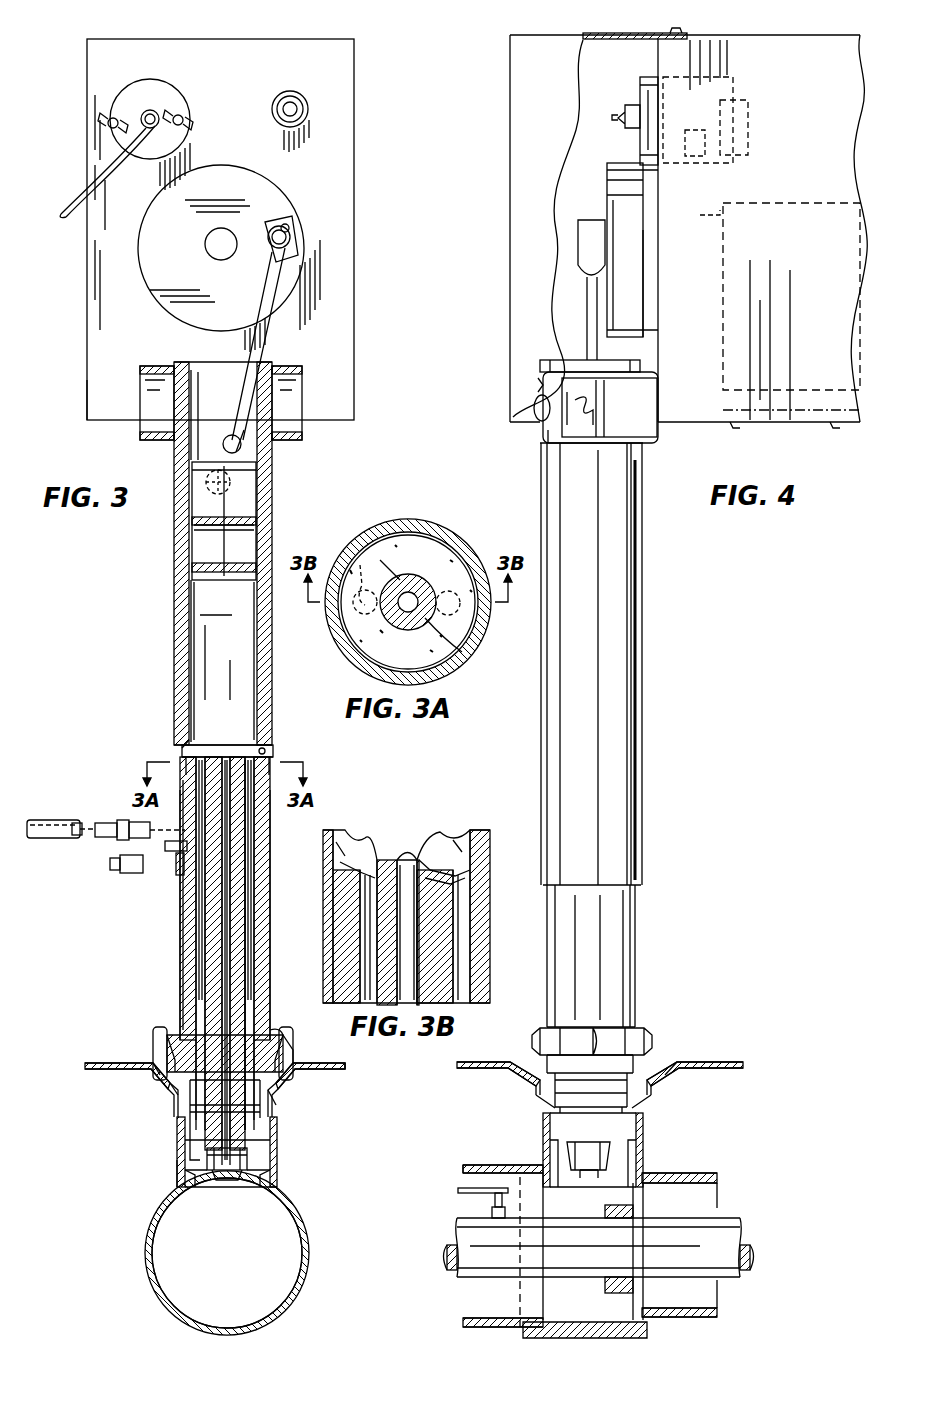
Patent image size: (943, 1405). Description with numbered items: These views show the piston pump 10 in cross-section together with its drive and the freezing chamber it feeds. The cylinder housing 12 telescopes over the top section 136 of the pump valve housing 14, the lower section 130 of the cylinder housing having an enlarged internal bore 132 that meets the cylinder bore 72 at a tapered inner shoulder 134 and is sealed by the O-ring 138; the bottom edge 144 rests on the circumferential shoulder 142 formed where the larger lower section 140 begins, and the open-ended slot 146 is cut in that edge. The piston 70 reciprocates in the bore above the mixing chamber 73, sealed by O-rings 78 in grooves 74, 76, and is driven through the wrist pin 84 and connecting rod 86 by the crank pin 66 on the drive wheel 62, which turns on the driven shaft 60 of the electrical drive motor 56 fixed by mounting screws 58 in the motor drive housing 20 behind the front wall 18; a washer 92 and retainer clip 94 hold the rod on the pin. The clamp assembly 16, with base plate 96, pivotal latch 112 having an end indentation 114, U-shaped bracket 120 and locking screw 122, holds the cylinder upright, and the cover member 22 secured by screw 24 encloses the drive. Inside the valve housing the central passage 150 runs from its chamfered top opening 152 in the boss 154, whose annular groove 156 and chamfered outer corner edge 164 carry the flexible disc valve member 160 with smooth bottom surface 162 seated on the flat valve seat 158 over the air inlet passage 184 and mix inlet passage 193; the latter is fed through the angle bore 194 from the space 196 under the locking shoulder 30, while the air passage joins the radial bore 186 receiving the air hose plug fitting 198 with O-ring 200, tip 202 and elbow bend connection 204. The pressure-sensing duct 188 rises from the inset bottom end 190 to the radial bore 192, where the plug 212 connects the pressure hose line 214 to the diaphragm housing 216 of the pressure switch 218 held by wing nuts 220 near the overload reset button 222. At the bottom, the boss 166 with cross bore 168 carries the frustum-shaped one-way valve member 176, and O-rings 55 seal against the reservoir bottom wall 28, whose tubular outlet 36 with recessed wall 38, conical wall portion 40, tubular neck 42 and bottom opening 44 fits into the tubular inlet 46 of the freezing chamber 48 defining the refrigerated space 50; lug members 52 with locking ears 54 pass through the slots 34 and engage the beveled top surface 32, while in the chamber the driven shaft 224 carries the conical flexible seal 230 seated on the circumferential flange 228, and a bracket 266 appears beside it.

In FIG. 3, the piston pump 10 is at (176, 685).
In FIG. 3, the cylinder housing 12 is at (273, 668).
In FIG. 3A, the cylinder housing 12 is at (418, 520).
In FIG. 4, the cylinder housing 12 is at (591, 664).
In FIG. 3, the pump valve housing 14 is at (272, 980).
In FIG. 4, the pump valve housing 14 is at (635, 953).
In FIG. 4, the clamp assembly 16 is at (648, 443).
In FIG. 3, the front wall 18 is at (241, 233).
In FIG. 4, the front wall 18 is at (662, 338).
In FIG. 3, the motor drive housing 20 is at (86, 403).
In FIG. 4, the motor drive housing 20 is at (781, 28).
In FIG. 4, the cover member 22 is at (625, 33).
In FIG. 4, the screw 24 is at (678, 28).
In FIG. 3, the bottom wall 28 is at (110, 1068).
In FIG. 4, the bottom wall 28 is at (727, 1062).
In FIG. 3, the locking shoulder 30 is at (175, 1045).
In FIG. 4, the locking shoulder 30 is at (652, 1042).
In FIG. 4, the beveled top surface 32 is at (645, 1038).
In FIG. 4, the slots 34 is at (634, 1025).
In FIG. 3, the tubular outlet 36 is at (276, 1092).
In FIG. 3, the recessed wall 38 is at (165, 1085).
In FIG. 4, the recessed wall 38 is at (668, 1068).
In FIG. 3, the conical wall portion 40 is at (178, 1095).
In FIG. 4, the conical wall portion 40 is at (545, 1100).
In FIG. 3, the tubular neck 42 is at (270, 1105).
In FIG. 4, the tubular neck 42 is at (630, 1118).
In FIG. 3, the bottom opening 44 is at (268, 1165).
In FIG. 4, the bottom opening 44 is at (545, 1150).
In FIG. 3, the tubular inlet 46 is at (279, 1140).
In FIG. 4, the tubular inlet 46 is at (645, 1143).
In FIG. 3, the freezing chamber 48 is at (305, 1222).
In FIG. 4, the freezing chamber 48 is at (692, 1168).
In FIG. 3, the refrigerated space 50 is at (160, 1236).
In FIG. 4, the refrigerated space 50 is at (490, 1293).
In FIG. 3, the lug members 52 is at (160, 1030).
In FIG. 3, the locking ears 54 is at (280, 1025).
In FIG. 3, the O-rings 55 is at (268, 1120).
In FIG. 4, the O-rings 55 is at (630, 1105).
In FIG. 4, the electrical drive motor 56 is at (833, 256).
In FIG. 4, the mounting screws 58 is at (840, 428).
In FIG. 3, the driven shaft 60 is at (232, 234).
In FIG. 4, the driven shaft 60 is at (668, 238).
In FIG. 3, the drive wheel 62 is at (296, 202).
In FIG. 4, the drive wheel 62 is at (607, 175).
In FIG. 3, the crank pin 66 is at (296, 249).
In FIG. 4, the crank pin 66 is at (578, 245).
In FIG. 3, the piston 70 is at (200, 546).
In FIG. 3, the cylinder bore 72 is at (191, 370).
In FIG. 3, the mixing chamber 73 is at (191, 615).
In FIG. 3, the groove 74 is at (252, 521).
In FIG. 3, the groove 76 is at (250, 568).
In FIG. 3, the O-rings 78 is at (256, 528).
In FIG. 3, the wrist pin 84 is at (258, 480).
In FIG. 3, the connecting rod 86 is at (261, 326).
In FIG. 4, the connecting rod 86 is at (587, 325).
In FIG. 3, the washer 92 is at (288, 231).
In FIG. 3, the retainer clip 94 is at (291, 235).
In FIG. 3, the base plate 96 is at (292, 392).
In FIG. 4, the pivotal latch 112 is at (540, 388).
In FIG. 4, the end indentation 114 is at (600, 408).
In FIG. 4, the U-shaped bracket 120 is at (550, 440).
In FIG. 4, the locking screw 122 is at (538, 412).
In FIG. 3, the lower section 130 is at (270, 850).
In FIG. 3, the internal bore 132 is at (268, 752).
In FIG. 3, the tapered inner shoulder 134 is at (190, 738).
In FIG. 3, the top section 136 is at (272, 830).
In FIG. 3, the O-ring 138 is at (272, 800).
In FIG. 3B, the O-ring 138 is at (480, 905).
In FIG. 3, the lower section 140 is at (262, 965).
In FIG. 3, the circumferential shoulder 142 is at (252, 920).
In FIG. 3, the bottom edge 144 is at (258, 895).
In FIG. 4, the bottom edge 144 is at (636, 890).
In FIG. 3, the open-ended slot 146 is at (178, 872).
In FIG. 3, the central passage 150 is at (258, 880).
In FIG. 3A, the central passage 150 is at (418, 594).
In FIG. 3B, the central passage 150 is at (405, 858).
In FIG. 3, the top opening 152 is at (262, 757).
In FIG. 3, the boss 154 is at (224, 770).
In FIG. 3A, the boss 154 is at (462, 652).
In FIG. 3B, the boss 154 is at (470, 865).
In FIG. 3B, the annular groove 156 is at (425, 855).
In FIG. 3B, the flat valve seat 158 is at (345, 845).
In FIG. 3, the disc valve member 160 is at (201, 757).
In FIG. 3A, the disc valve member 160 is at (390, 540).
In FIG. 3B, the disc valve member 160 is at (358, 850).
In FIG. 3B, the bottom surface 162 is at (470, 882).
In FIG. 3B, the outer corner edge 164 is at (465, 845).
In FIG. 3, the boss 166 is at (210, 1172).
In FIG. 4, the boss 166 is at (580, 1172).
In FIG. 3, the cross bore 168 is at (240, 1178).
In FIG. 3, the one-way valve member 176 is at (178, 1175).
In FIG. 4, the one-way valve member 176 is at (640, 1158).
In FIG. 3, the air inlet passage 184 is at (185, 765).
In FIG. 3A, the air inlet passage 184 is at (370, 540).
In FIG. 3B, the air inlet passage 184 is at (406, 925).
In FIG. 3, the radial bore 186 is at (185, 785).
In FIG. 3, the pressure-sensing duct 188 is at (200, 960).
In FIG. 3, the inset bottom end 190 is at (200, 1165).
In FIG. 3, the radial bore 192 is at (188, 846).
In FIG. 3, the mix inlet passage 193 is at (250, 925).
In FIG. 3A, the mix inlet passage 193 is at (486, 632).
In FIG. 3B, the mix inlet passage 193 is at (455, 950).
In FIG. 3, the angle bore 194 is at (296, 1045).
In FIG. 3, the space 196 is at (333, 1064).
In FIG. 3, the air hose plug fitting 198 is at (112, 820).
In FIG. 3, the O-ring 200 is at (140, 822).
In FIG. 3, the tip 202 is at (76, 822).
In FIG. 3, the elbow bend connection 204 is at (27, 820).
In FIG. 3, the plug 212 is at (130, 874).
In FIG. 3, the pressure hose line 214 is at (76, 195).
In FIG. 3, the diaphragm housing 216 is at (150, 79).
In FIG. 4, the diaphragm housing 216 is at (640, 80).
In FIG. 4, the pressure switch 218 is at (735, 88).
In FIG. 3, the wing nuts 220 is at (196, 122).
In FIG. 4, the wing nuts 220 is at (630, 105).
In FIG. 3, the overload reset button 222 is at (308, 105).
In FIG. 4, the driven shaft 224 is at (717, 1213).
In FIG. 4, the circumferential flange 228 is at (640, 1210).
In FIG. 4, the conical flexible seal 230 is at (625, 1210).
In FIG. 4, the bracket 266 is at (490, 1188).